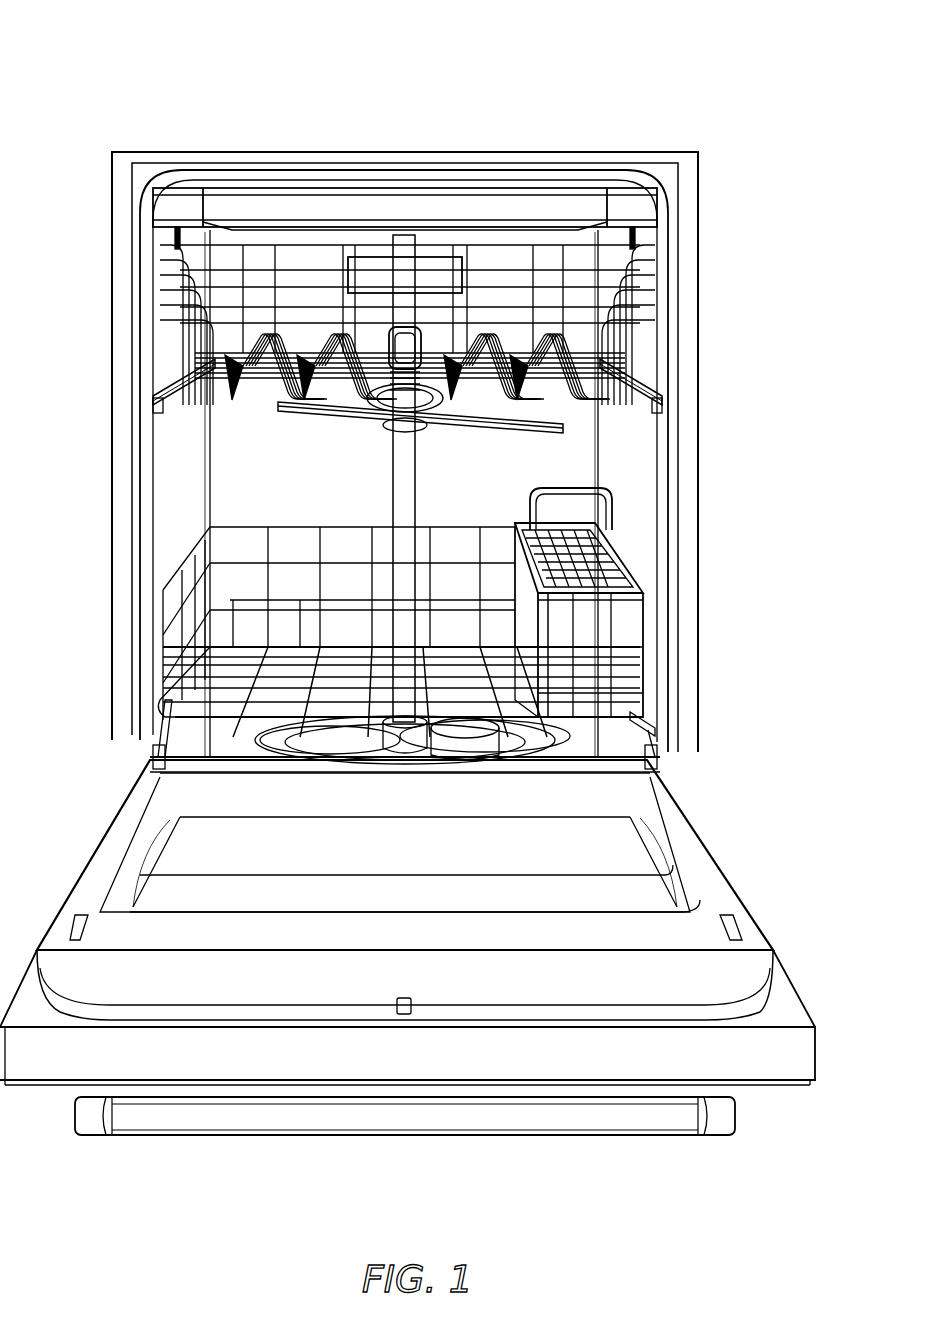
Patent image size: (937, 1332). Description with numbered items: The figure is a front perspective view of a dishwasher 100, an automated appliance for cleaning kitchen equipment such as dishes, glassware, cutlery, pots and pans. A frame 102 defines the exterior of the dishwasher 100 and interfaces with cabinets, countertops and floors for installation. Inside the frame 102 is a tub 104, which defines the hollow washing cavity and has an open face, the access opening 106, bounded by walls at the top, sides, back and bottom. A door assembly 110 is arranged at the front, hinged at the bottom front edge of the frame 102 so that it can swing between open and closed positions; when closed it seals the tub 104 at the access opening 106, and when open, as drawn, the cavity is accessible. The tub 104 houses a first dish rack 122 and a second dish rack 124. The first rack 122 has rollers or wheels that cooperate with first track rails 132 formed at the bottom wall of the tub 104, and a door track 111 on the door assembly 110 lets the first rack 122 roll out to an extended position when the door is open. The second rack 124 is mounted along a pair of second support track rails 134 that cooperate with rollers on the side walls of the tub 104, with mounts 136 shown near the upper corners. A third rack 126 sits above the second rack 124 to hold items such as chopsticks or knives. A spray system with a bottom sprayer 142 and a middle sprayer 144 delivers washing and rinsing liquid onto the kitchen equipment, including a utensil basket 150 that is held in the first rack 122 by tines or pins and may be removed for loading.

The dishwasher 100 is at (34, 60).
The frame 102 is at (700, 187).
The tub 104 is at (668, 480).
The access opening 106 is at (305, 470).
The door assembly 110 is at (595, 875).
The door track 111 is at (676, 820).
The first dish rack 122 is at (548, 705).
The second dish rack 124 is at (640, 325).
The third rack 126 is at (490, 205).
The first track rails 132 is at (150, 735).
The second support track rails 134 is at (150, 395).
The rail mounts 136 is at (175, 240).
The bottom sprayer 142 is at (475, 740).
The middle sprayer 144 is at (330, 415).
The utensil basket 150 is at (612, 617).